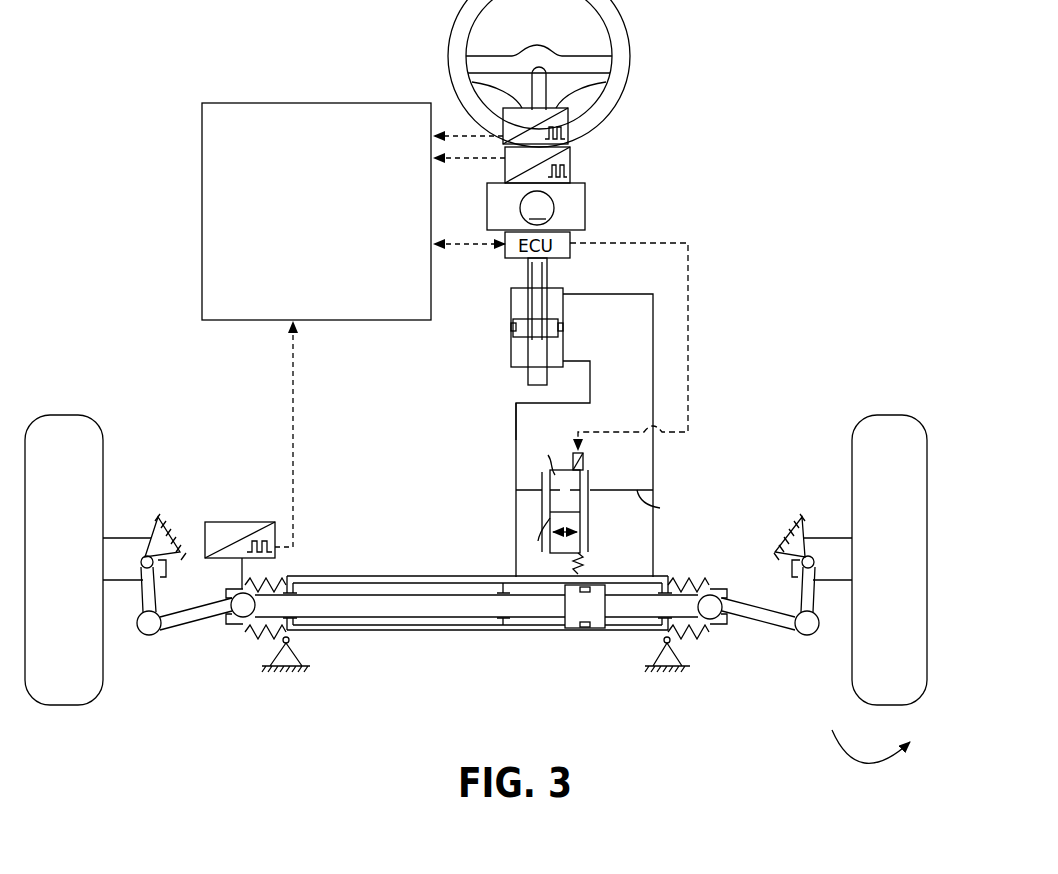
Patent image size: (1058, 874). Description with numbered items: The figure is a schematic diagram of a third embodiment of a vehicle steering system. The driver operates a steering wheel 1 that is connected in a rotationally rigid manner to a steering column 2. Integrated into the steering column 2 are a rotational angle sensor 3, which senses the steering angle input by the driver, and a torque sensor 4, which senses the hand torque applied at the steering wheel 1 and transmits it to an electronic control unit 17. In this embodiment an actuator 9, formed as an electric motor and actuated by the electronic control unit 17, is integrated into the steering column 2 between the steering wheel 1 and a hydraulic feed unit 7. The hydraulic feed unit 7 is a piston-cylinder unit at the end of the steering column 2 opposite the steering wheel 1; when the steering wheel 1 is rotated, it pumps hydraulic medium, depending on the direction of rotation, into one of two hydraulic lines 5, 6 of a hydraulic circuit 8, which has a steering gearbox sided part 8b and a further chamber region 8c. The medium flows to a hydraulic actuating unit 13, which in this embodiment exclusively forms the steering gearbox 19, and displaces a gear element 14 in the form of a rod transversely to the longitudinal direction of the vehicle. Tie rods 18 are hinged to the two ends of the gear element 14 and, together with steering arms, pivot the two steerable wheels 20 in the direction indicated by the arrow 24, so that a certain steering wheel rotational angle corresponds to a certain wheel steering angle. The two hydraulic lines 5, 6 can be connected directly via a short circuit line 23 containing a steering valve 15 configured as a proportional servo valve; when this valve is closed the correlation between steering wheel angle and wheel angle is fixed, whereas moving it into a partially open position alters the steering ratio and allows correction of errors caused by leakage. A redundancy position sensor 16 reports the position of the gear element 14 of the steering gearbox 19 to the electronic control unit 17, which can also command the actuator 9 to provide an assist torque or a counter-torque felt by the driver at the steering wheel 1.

The steering wheel 1 is at (620, 70).
The steering column 2 is at (543, 80).
The rotational angle sensor 3 is at (572, 163).
The torque sensor 4 is at (572, 126).
The hydraulic line 5 is at (618, 293).
The hydraulic line 6 is at (515, 420).
The hydraulic feed unit 7 is at (508, 336).
The hydraulic circuit 8 is at (603, 502).
The steering gearbox sided part 8b is at (631, 540).
The working chamber 8c is at (631, 357).
The actuator 9 is at (587, 203).
The hydraulic actuating unit 13 is at (477, 647).
The gear element 14 is at (400, 612).
The steering valve 15 is at (555, 518).
The redundancy position sensor 16 is at (232, 528).
The electronic control unit 17 is at (332, 234).
The tie rods 18 is at (193, 620).
The steering gearbox 19 is at (510, 640).
The steerable wheels 20 is at (88, 688).
The short circuit line 23 is at (660, 508).
The arrow 24 is at (850, 757).